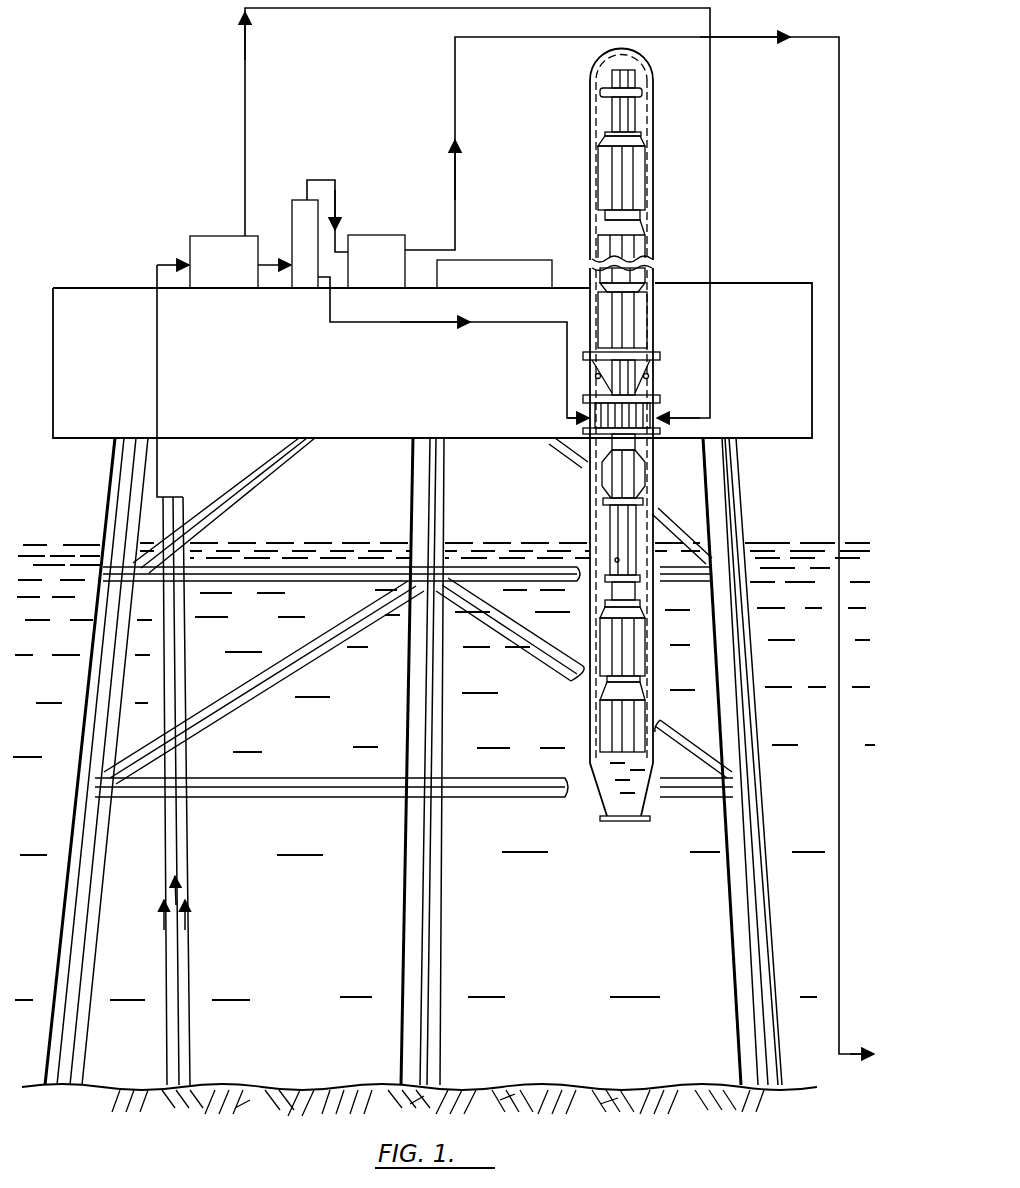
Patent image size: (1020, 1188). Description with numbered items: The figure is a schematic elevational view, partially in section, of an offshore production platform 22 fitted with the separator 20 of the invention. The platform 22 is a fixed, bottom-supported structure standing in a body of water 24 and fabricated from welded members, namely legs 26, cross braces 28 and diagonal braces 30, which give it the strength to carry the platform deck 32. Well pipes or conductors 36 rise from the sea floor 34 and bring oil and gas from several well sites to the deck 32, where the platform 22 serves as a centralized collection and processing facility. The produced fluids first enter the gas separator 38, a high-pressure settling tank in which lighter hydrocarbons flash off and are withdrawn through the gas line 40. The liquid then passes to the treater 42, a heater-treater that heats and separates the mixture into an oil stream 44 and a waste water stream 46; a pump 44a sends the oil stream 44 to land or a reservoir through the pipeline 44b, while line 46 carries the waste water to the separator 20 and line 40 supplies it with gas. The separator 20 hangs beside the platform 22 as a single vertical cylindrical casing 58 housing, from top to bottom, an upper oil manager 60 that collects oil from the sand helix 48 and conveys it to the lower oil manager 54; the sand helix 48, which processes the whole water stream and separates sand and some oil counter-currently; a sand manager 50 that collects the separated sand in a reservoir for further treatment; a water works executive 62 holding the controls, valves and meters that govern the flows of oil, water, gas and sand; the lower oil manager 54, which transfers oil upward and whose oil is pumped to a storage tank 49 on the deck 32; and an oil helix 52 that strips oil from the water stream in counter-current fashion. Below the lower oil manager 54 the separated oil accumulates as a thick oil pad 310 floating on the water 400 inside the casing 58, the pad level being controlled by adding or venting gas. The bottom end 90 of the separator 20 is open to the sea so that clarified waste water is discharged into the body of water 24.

The separator 20 is at (686, 195).
The offshore platform 22 is at (108, 456).
The body of water 24 is at (72, 538).
The legs 26 is at (100, 738).
The cross braces 28 is at (262, 578).
The diagonal braces 30 is at (246, 478).
The platform deck 32 is at (105, 288).
The sea floor 34 is at (296, 1086).
The well pipes or conductors 36 is at (165, 981).
The gas separator 38 is at (215, 245).
The gas line 40 is at (248, 48).
The treater 42 is at (288, 222).
The oil stream 44 is at (322, 180).
The pump 44a is at (370, 247).
The pipeline 44b is at (455, 113).
The waste water stream 46 is at (363, 322).
The sand helix 48 is at (613, 185).
The storage tank 49 is at (489, 268).
The sand manager 50 is at (677, 375).
The oil helix 52 is at (612, 661).
The lower oil manager 54 is at (584, 470).
The casing 58 is at (654, 124).
The upper oil manager 60 is at (586, 80).
The water works executive 62 is at (677, 405).
The bottom end 90 is at (605, 822).
The oil pad 310 is at (658, 574).
The water 400 is at (594, 594).